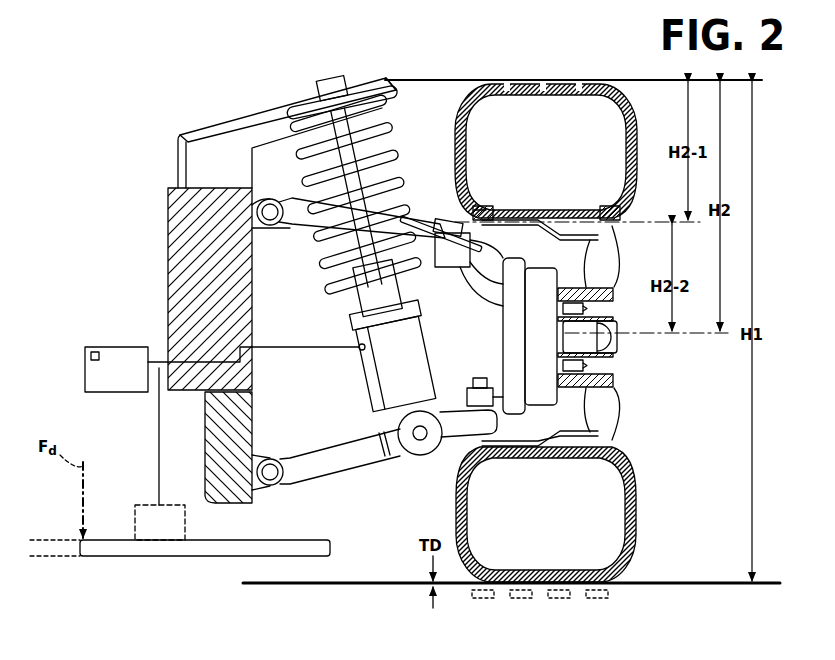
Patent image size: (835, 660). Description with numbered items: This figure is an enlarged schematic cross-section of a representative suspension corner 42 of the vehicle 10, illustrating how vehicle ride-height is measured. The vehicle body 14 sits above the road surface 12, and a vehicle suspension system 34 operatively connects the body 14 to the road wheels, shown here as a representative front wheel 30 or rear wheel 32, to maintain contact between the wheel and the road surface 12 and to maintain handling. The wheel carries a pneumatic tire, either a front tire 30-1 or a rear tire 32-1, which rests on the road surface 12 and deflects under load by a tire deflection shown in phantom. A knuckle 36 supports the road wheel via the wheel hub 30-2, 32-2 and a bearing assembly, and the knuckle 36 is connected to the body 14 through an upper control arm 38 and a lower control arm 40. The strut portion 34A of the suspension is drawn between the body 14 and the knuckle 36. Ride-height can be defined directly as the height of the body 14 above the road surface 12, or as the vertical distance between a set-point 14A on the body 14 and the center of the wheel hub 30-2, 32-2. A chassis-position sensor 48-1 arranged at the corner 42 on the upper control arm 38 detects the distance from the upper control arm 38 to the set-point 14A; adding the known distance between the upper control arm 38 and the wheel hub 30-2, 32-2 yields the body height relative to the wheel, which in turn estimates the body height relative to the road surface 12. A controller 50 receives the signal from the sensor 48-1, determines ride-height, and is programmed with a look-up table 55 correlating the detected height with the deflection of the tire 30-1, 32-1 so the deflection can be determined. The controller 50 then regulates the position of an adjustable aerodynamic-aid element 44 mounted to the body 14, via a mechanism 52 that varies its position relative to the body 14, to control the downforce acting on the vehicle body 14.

The vehicle 10 is at (246, 95).
The road surface 12 is at (628, 590).
The vehicle body 14 is at (306, 85).
The set-point 14A is at (380, 78).
The front wheel 30 is at (614, 333).
The rear wheel 32 is at (610, 430).
The front tire 30-1 is at (604, 514).
The rear tire 32-1 is at (630, 510).
The wheel hub 30-2 is at (655, 345).
The wheel hub 32-2 is at (612, 342).
The vehicle suspension system 34 is at (282, 185).
The strut body / damper 34A is at (393, 356).
The knuckle 36 is at (553, 284).
The upper control arm 38 is at (424, 228).
The lower control arm 40 is at (345, 455).
The suspension corner 42 is at (486, 76).
The adjustable aerodynamic-aid element 44 is at (125, 538).
The chassis-position sensor 48-1 is at (466, 212).
The controller 50 is at (222, 426).
The mechanism 52 is at (160, 522).
The look-up table 55 is at (92, 352).